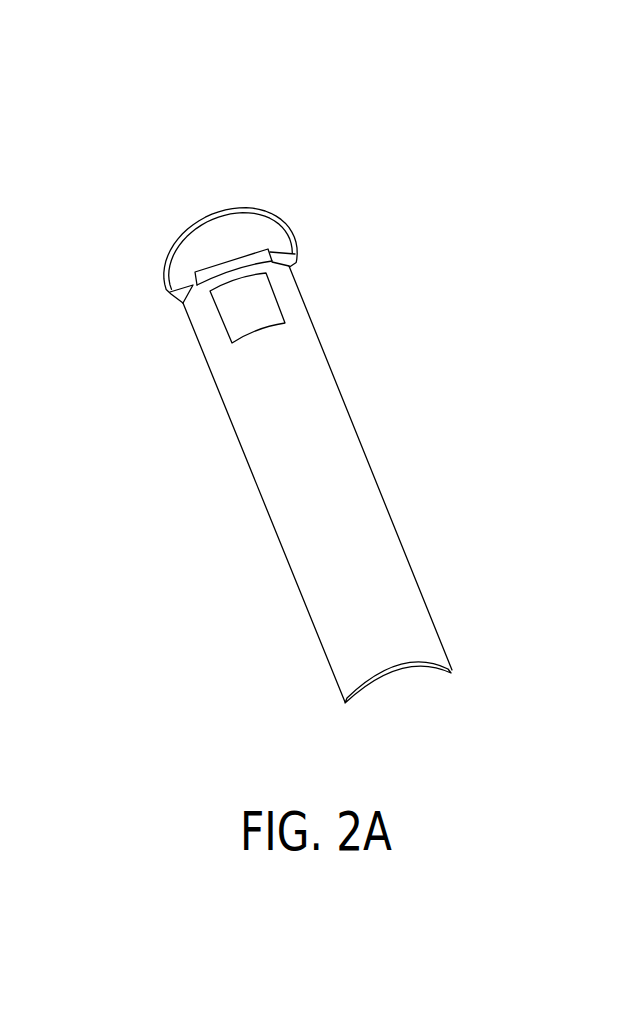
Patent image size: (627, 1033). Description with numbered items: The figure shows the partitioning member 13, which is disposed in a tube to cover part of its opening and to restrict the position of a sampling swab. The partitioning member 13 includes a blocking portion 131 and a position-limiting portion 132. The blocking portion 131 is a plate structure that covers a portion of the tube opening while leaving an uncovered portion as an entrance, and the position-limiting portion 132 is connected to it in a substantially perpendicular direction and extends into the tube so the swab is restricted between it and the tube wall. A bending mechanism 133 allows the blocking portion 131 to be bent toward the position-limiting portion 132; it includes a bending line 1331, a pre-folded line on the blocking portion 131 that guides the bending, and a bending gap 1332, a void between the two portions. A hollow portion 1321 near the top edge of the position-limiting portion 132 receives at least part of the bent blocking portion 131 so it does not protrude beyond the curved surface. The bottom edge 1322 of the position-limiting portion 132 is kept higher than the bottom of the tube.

The partitioning member 13 is at (536, 192).
The blocking portion 131 is at (263, 208).
The position-limiting portion 132 is at (370, 468).
The bending mechanism 133 is at (153, 266).
The hollow portion 1321 is at (250, 307).
The bottom edge 1322 is at (397, 675).
The bending line 1331 is at (287, 263).
The bending gap 1332 is at (270, 250).